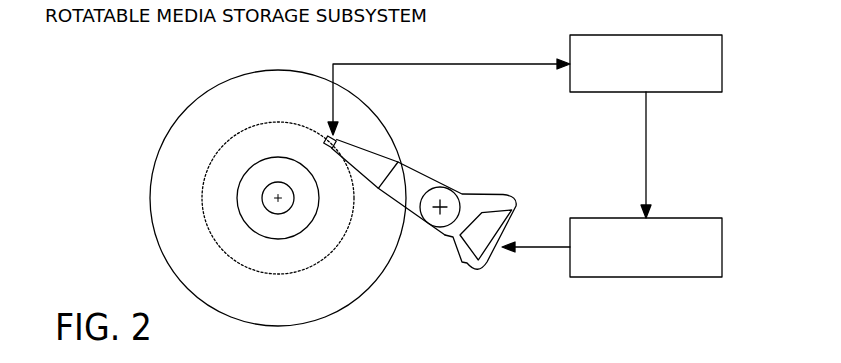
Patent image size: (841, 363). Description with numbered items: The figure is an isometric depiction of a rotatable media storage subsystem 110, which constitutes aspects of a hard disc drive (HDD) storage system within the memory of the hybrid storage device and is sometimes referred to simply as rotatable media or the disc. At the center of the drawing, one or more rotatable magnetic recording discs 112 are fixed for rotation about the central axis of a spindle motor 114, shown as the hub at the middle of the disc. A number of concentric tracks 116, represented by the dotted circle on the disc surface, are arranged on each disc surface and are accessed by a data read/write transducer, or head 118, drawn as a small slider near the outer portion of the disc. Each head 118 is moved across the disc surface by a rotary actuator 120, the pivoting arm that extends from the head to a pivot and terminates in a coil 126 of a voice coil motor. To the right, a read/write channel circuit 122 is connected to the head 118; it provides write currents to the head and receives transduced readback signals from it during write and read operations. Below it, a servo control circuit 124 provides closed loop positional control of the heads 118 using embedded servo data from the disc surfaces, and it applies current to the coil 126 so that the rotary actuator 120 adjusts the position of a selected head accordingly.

The rotatable media storage subsystem 110 is at (254, 184).
The rotatable magnetic recording disc 112 is at (178, 233).
The spindle motor 114 is at (282, 173).
The concentric tracks 116 is at (280, 271).
The data read/write transducer (head) 118 is at (325, 134).
The rotary actuator 120 is at (423, 177).
The read/write (R/W) channel circuit 122 is at (645, 35).
The servo control circuit 124 is at (675, 218).
The coil 126 is at (512, 198).